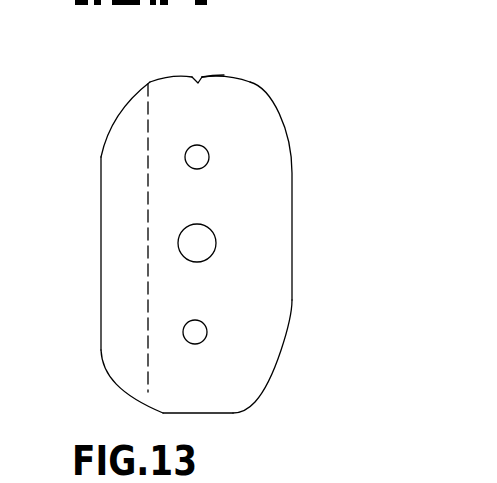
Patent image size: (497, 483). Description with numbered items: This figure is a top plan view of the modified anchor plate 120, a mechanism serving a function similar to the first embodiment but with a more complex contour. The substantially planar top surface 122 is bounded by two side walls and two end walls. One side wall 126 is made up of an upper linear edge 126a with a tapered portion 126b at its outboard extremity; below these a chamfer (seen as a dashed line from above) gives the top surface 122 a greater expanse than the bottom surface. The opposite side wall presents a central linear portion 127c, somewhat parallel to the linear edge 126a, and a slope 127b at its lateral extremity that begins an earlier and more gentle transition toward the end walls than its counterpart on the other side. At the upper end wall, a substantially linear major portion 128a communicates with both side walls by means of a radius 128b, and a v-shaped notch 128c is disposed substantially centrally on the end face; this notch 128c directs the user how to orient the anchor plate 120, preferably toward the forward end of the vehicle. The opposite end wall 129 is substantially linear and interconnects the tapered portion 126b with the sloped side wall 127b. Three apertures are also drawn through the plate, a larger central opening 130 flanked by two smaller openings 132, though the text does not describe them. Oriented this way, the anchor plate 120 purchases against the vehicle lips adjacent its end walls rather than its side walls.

The anchor plate 120 is at (97, 99).
The top surface 122 is at (256, 204).
The side wall 126 is at (100, 186).
The upper linear edge 126a is at (100, 270).
The tapered portion 126b is at (130, 390).
The slope 127b is at (272, 368).
The central linear portion 127c is at (292, 221).
The major portion 128a is at (213, 76).
The radius 128b is at (150, 80).
The v-shaped notch 128c is at (193, 76).
The second end wall 129 is at (203, 413).
The central large aperture 130 is at (198, 254).
The small apertures 132 is at (204, 148).